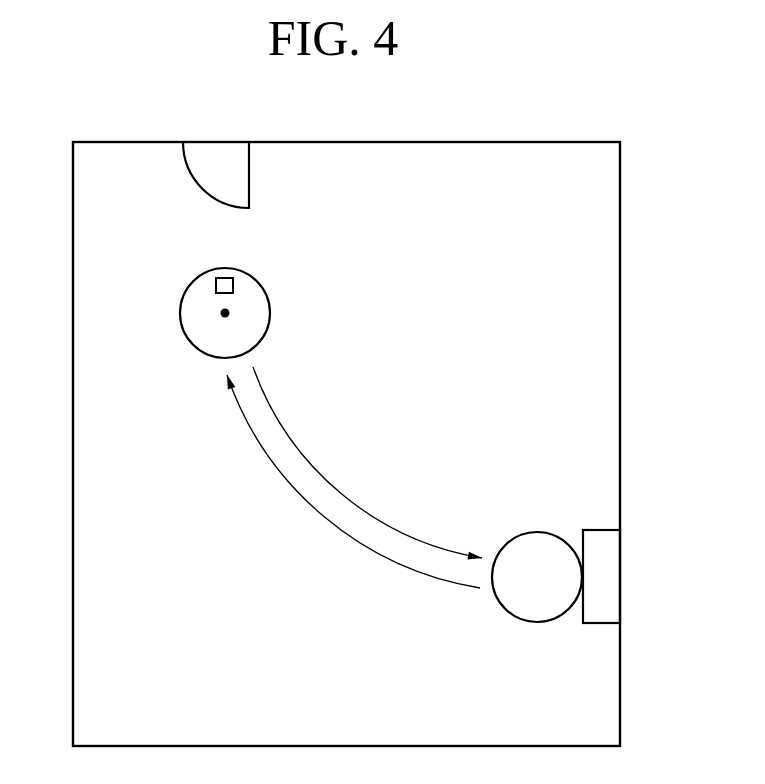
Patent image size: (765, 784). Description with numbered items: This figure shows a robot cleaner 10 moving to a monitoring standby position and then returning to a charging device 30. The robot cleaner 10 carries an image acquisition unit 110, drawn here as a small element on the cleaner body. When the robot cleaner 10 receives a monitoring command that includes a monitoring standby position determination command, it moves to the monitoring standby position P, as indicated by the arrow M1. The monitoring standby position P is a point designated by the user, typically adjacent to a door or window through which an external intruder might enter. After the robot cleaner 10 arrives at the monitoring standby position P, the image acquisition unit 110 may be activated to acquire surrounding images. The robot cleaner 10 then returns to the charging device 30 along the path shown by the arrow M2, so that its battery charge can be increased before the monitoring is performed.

The robot cleaner 10 is at (271, 310).
The image acquisition unit 110 is at (225, 278).
The monitoring standby position P is at (225, 313).
The arrow M1 is at (264, 454).
The arrow M2 is at (330, 484).
The charging device 30 is at (610, 578).